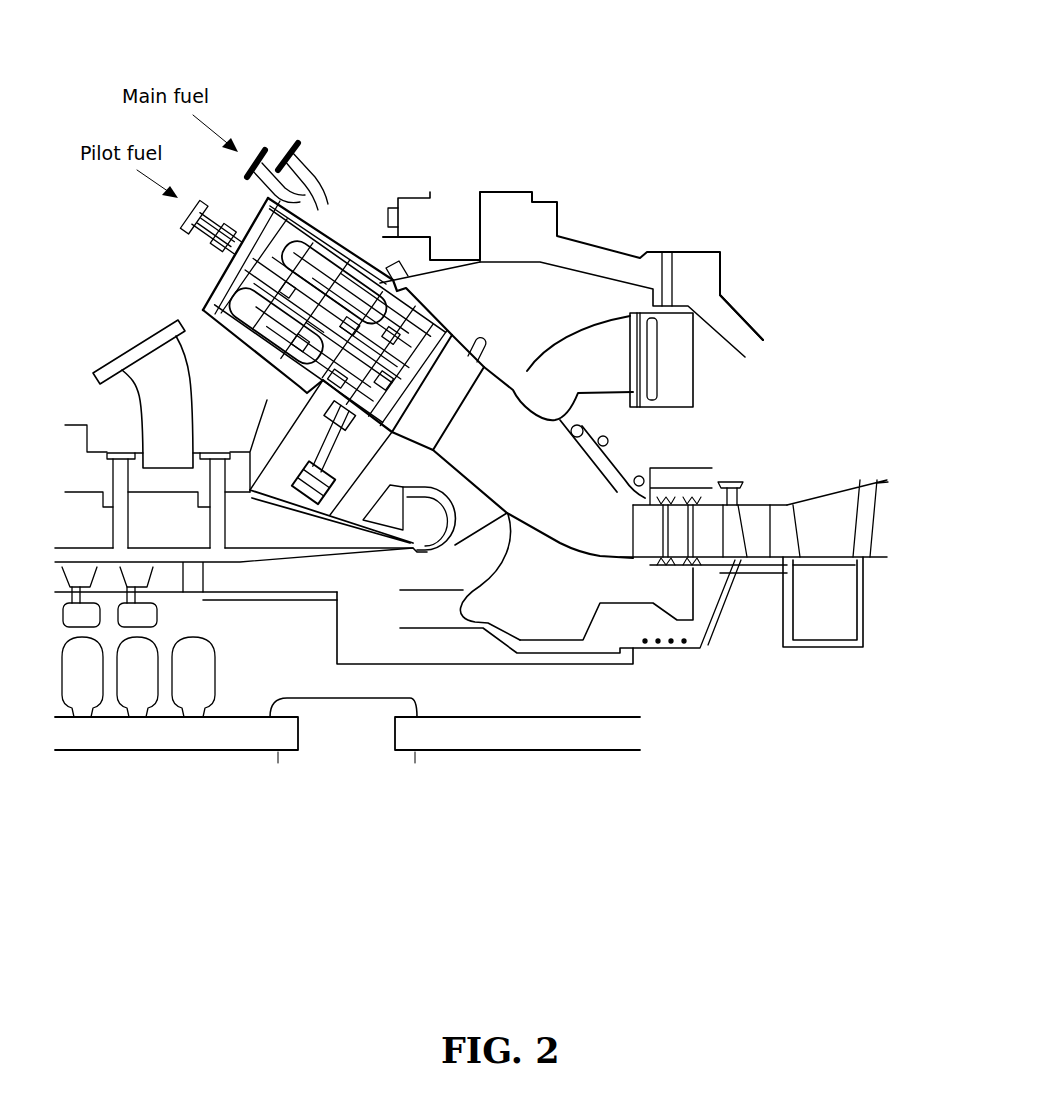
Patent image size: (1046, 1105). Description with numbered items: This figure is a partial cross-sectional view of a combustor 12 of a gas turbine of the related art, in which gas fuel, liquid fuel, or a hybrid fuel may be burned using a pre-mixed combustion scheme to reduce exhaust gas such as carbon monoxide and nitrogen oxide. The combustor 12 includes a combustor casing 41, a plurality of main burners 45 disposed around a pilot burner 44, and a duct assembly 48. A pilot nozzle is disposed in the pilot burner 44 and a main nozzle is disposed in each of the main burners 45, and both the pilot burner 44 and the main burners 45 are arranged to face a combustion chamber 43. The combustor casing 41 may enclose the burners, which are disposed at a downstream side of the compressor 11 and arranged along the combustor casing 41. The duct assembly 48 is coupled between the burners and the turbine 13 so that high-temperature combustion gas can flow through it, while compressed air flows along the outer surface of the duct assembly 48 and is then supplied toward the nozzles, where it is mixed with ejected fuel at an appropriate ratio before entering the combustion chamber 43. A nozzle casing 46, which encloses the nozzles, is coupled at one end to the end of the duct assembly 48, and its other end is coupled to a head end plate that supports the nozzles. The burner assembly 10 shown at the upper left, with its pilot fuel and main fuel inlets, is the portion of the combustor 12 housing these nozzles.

The burner 10 is at (322, 202).
The compressor 11 is at (151, 752).
The combustor 12 is at (517, 90).
The turbine 13 is at (880, 567).
The combustor casing 41 is at (577, 236).
The combustion chamber 43 is at (477, 367).
The pilot burner 44 is at (397, 297).
The main burners 45 is at (295, 140).
The nozzle casing 46 is at (264, 168).
The duct assembly 48 is at (571, 522).